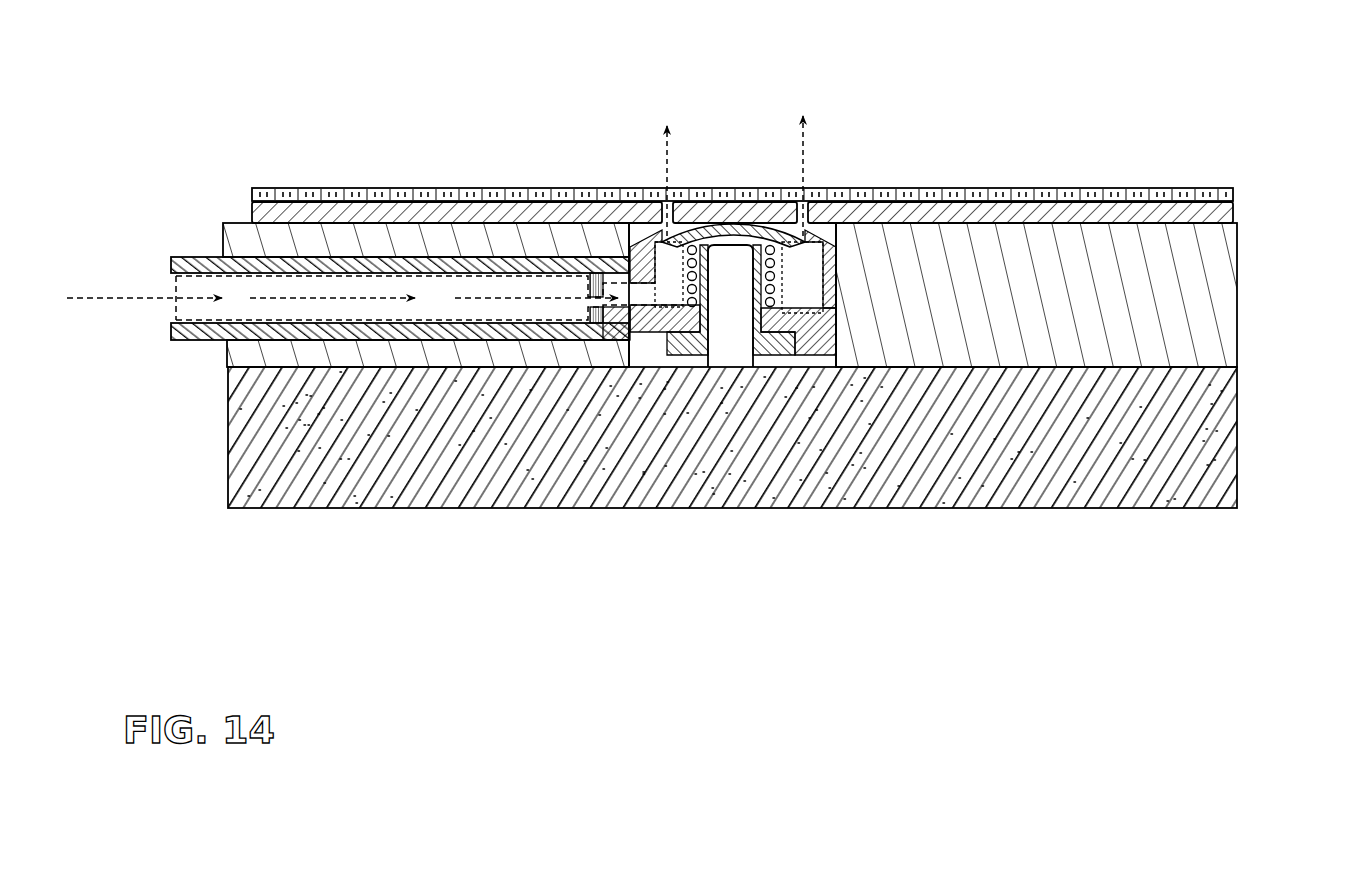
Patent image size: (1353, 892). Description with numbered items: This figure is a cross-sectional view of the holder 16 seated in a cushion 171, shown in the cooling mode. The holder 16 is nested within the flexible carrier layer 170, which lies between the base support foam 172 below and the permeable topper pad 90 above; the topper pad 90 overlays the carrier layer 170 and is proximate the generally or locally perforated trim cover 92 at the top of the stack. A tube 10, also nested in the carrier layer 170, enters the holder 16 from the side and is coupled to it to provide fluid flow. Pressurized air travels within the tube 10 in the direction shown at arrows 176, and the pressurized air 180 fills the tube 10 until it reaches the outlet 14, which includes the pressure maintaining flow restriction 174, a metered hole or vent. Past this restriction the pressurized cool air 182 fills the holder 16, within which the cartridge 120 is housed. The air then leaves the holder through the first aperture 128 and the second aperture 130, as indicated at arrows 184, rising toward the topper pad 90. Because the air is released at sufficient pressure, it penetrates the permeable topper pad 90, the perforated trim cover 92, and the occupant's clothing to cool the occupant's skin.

The tube 10 is at (410, 335).
The outlet 14 is at (620, 258).
The holder 16 is at (825, 323).
The permeable topper pad 90 is at (1218, 213).
The trim cover 92 is at (1165, 197).
The cartridge 120 is at (763, 235).
The first aperture 128 is at (662, 232).
The second aperture 130 is at (803, 235).
The carrier layer 170 is at (1192, 315).
The cushion 171 is at (1264, 257).
The base support foam 172 is at (1157, 460).
The pressure maintaining flow restriction 174 is at (620, 280).
The arrows 176 is at (110, 298).
The pressurized air 180 is at (240, 302).
The pressurized cool air 182 is at (667, 282).
The arrows 184 is at (668, 158).